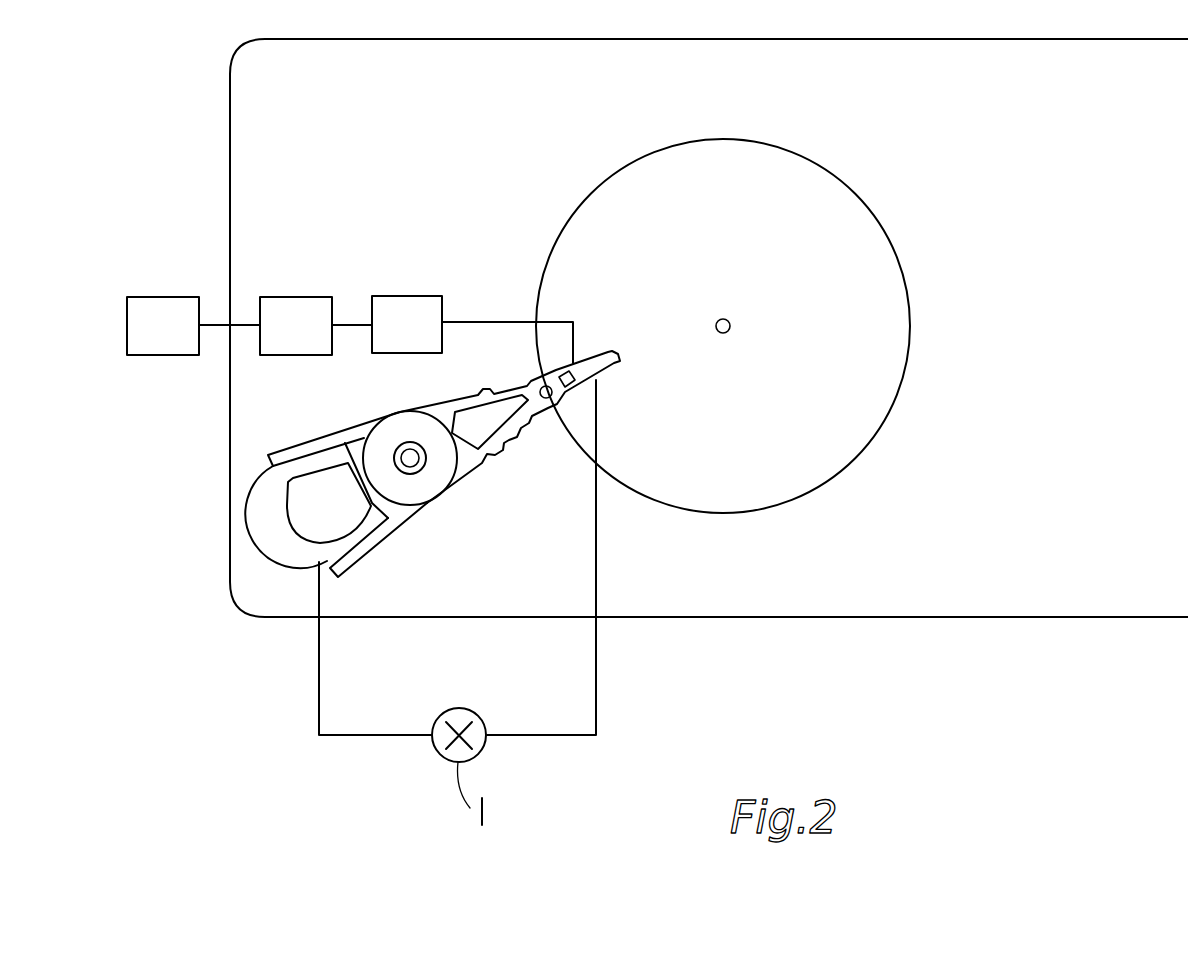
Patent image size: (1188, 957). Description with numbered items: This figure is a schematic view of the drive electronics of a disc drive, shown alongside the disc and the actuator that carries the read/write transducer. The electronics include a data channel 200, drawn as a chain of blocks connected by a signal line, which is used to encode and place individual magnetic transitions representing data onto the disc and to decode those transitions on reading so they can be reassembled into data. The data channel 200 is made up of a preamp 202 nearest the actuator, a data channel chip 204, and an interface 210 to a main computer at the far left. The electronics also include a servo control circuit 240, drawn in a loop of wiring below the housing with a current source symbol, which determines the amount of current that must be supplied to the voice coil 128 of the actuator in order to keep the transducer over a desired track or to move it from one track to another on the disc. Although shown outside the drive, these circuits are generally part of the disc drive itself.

The interface 210 is at (165, 295).
The data channel chip 204 is at (300, 297).
The preamp 202 is at (412, 296).
The data channel 200 is at (352, 326).
The voice coil 128 is at (277, 534).
The servo control circuit 240 is at (540, 735).